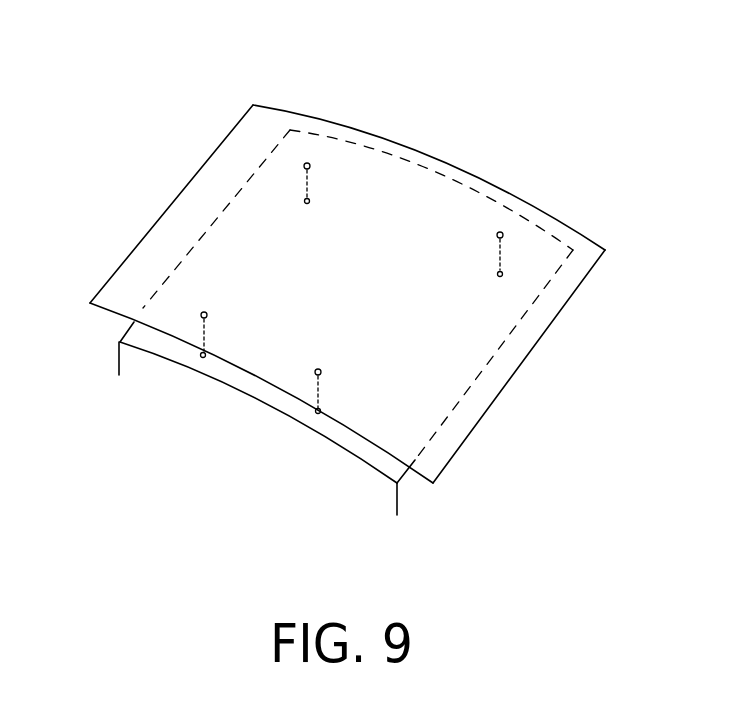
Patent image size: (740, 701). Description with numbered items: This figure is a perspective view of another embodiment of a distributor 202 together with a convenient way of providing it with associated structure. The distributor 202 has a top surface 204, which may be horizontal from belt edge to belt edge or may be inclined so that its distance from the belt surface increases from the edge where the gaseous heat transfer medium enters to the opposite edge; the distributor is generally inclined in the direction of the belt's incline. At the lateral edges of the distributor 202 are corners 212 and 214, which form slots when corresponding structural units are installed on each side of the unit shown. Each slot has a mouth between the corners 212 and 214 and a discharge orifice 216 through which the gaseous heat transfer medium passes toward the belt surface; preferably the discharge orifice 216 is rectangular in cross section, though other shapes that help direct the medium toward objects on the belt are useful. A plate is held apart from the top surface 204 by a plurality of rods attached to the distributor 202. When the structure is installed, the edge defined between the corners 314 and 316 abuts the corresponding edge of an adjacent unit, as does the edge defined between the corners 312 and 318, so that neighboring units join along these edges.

The distributor 202 is at (238, 400).
The top surface 204 is at (162, 342).
The corner 212 is at (397, 483).
The corner 214 is at (118, 345).
The discharge orifice 216 is at (400, 503).
The corner 312 is at (433, 483).
The corner 314 is at (90, 303).
The corner 316 is at (253, 105).
The corner 318 is at (605, 250).